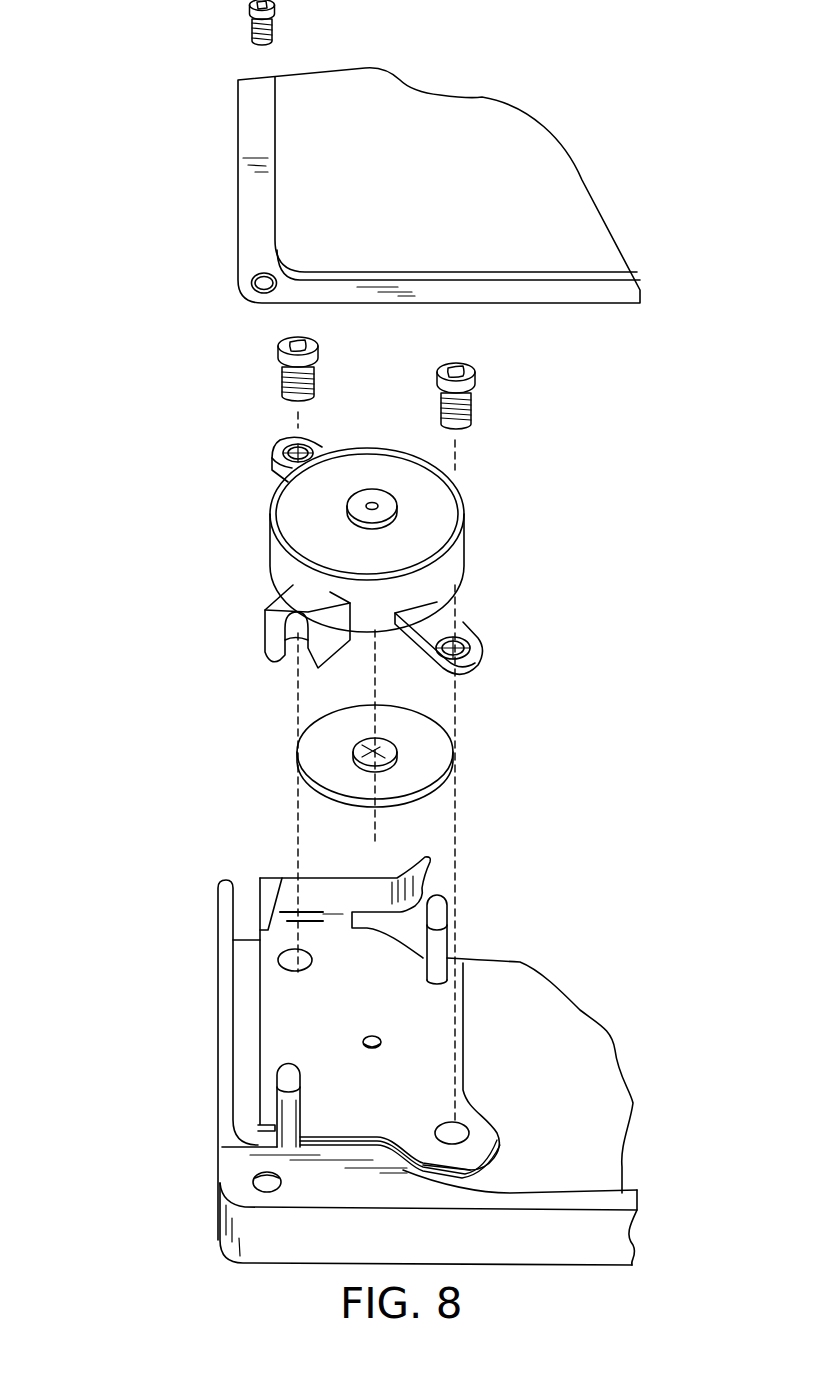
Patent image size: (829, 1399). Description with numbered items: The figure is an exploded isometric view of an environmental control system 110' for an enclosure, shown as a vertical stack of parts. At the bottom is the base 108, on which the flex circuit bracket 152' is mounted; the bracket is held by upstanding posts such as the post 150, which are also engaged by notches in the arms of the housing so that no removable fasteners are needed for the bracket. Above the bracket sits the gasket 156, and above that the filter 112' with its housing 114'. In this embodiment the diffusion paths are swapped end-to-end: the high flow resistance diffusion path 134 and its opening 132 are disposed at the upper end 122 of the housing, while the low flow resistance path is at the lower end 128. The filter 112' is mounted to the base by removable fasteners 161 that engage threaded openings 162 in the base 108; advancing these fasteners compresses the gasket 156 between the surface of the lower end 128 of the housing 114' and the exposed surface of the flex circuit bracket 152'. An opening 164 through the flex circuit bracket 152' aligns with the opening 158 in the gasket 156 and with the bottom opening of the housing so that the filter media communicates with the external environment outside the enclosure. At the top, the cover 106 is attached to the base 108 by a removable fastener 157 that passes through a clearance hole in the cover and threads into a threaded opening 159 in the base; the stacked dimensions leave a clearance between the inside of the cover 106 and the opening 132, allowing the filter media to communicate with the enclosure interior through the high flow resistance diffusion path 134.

The cover 106 is at (238, 192).
The base 108 is at (372, 1077).
The environmental control system 110' is at (342, 649).
The filter 112' is at (390, 555).
The housing 114' is at (371, 555).
The upper end 122 is at (465, 530).
The lower end 128 is at (458, 570).
The opening 132 is at (489, 487).
The high flow resistance diffusion path 134 is at (378, 504).
The upstanding post 150 is at (449, 918).
The flex circuit bracket 152' is at (206, 1106).
The gasket 156 is at (368, 756).
The removable fastener 157 is at (250, 12).
The opening 158 is at (360, 746).
The threaded opening 159 is at (253, 1181).
The removable fastener 161 is at (440, 375).
The threaded opening 162 is at (280, 960).
The opening 164 is at (362, 1042).